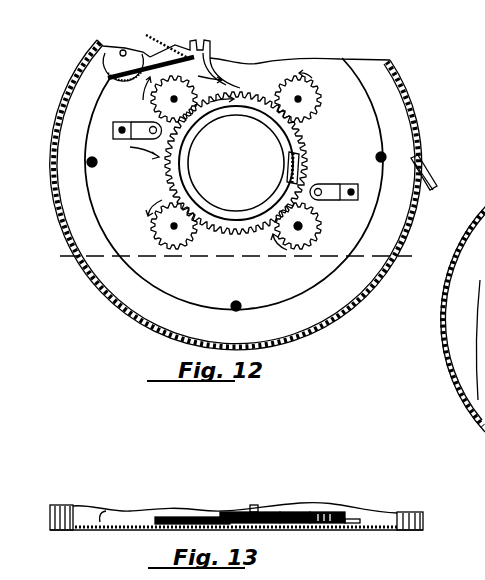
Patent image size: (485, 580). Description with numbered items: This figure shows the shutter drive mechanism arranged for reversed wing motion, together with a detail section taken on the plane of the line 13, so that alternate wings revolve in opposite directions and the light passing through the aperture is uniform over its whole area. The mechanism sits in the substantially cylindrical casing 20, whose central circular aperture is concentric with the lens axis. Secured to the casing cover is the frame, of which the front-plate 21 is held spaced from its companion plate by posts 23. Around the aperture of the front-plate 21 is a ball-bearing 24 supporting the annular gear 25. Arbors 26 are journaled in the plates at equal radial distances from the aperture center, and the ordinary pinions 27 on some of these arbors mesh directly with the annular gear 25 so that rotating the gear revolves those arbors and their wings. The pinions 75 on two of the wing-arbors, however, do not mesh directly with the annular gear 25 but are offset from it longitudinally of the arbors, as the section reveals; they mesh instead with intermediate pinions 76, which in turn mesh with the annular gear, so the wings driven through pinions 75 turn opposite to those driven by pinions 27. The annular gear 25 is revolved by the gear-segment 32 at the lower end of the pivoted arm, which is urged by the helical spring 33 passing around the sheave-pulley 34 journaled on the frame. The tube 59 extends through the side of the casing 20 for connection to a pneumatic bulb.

In FIG. 12, the section line 13 is at (60, 254).
In FIG. 12, the casing 20 is at (416, 229).
In FIG. 13, the casing 20 is at (63, 506).
In FIG. 12, the front-plate 21 is at (369, 108).
In FIG. 13, the front-plate 21 is at (235, 513).
In FIG. 12, the posts 23 is at (95, 167).
In FIG. 12, the ball-bearing 24 is at (302, 157).
In FIG. 12, the annular gear 25 is at (302, 134).
In FIG. 13, the annular gear 25 is at (218, 516).
In FIG. 12, the arbors 26 is at (172, 227).
In FIG. 12, the pinions 27 is at (318, 102).
In FIG. 13, the pinions 27 is at (168, 517).
In FIG. 12, the gear-segment 32 is at (148, 36).
In FIG. 12, the helical spring 33 is at (111, 74).
In FIG. 12, the sheave-pulley 34 is at (113, 47).
In FIG. 12, the tube 59 is at (431, 190).
In FIG. 12, the pinions 75 is at (155, 95).
In FIG. 13, the pinions 75 is at (283, 512).
In FIG. 12, the intermediate pinions 76 is at (135, 139).
In FIG. 13, the intermediate pinions 76 is at (339, 513).